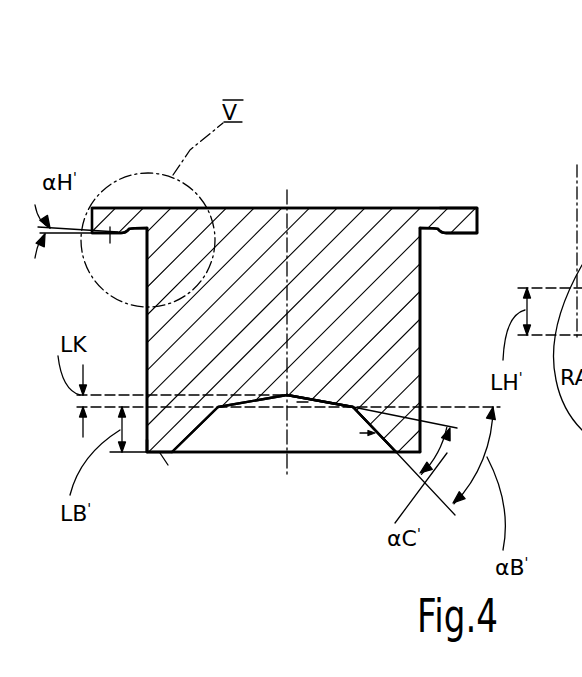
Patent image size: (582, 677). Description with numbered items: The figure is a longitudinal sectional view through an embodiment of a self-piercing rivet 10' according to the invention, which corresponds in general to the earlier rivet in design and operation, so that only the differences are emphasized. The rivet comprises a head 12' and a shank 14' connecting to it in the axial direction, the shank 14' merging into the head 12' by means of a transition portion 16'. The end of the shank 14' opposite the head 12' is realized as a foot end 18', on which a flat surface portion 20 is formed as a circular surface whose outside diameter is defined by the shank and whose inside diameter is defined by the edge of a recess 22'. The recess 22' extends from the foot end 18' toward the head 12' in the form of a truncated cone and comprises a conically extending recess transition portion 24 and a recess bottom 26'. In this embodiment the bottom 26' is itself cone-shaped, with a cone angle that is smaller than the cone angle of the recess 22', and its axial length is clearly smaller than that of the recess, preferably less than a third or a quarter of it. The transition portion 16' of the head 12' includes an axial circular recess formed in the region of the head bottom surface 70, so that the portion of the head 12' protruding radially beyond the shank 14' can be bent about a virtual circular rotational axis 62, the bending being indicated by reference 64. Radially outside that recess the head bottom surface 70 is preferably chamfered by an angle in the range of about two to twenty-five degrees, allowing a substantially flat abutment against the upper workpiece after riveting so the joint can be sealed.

The self-piercing rivet 10' is at (291, 259).
The head 12' is at (284, 167).
The shank 14' is at (112, 340).
The transition portion 16' is at (461, 340).
The foot end 18' is at (265, 529).
The flat surface portion 20 is at (158, 453).
The recess 22' is at (284, 513).
The recess transition portion 24 is at (367, 438).
The recess bottom 26' is at (324, 493).
The virtual circular rotational axis 62 is at (430, 229).
The bending of the head protrusion 64 is at (507, 222).
The head bottom surface 70 is at (115, 228).